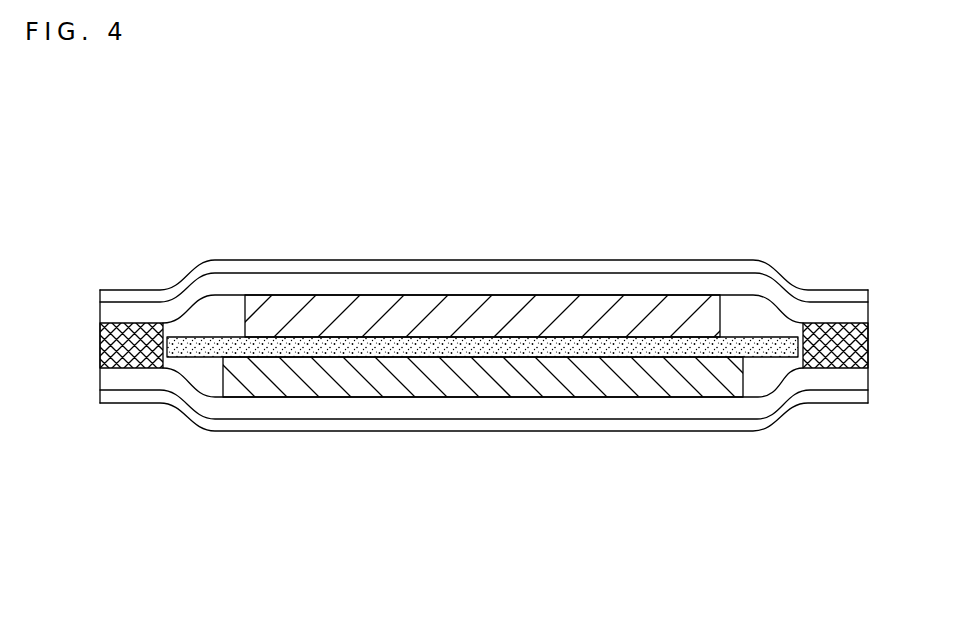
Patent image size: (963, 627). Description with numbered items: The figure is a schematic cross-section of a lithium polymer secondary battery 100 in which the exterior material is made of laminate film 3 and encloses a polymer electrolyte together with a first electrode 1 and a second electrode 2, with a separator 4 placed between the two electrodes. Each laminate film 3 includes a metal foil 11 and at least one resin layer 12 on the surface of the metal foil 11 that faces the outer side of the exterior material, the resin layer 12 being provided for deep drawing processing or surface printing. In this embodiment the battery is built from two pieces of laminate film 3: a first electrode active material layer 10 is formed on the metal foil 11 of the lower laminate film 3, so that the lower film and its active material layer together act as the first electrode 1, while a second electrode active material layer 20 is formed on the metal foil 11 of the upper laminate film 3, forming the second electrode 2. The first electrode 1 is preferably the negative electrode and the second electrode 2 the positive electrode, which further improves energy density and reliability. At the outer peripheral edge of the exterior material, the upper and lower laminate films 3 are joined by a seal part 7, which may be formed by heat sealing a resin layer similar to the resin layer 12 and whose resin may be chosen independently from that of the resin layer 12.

The secondary battery 100 is at (474, 349).
The first electrode 1 is at (507, 456).
The second electrode 2 is at (515, 242).
The laminate film 3 is at (484, 349).
The separator 4 is at (302, 368).
The seal part 7 is at (100, 342).
The first electrode active material layer 10 is at (472, 372).
The metal foil 11 is at (448, 283).
The resin layer 12 is at (415, 268).
The second electrode active material layer 20 is at (483, 312).